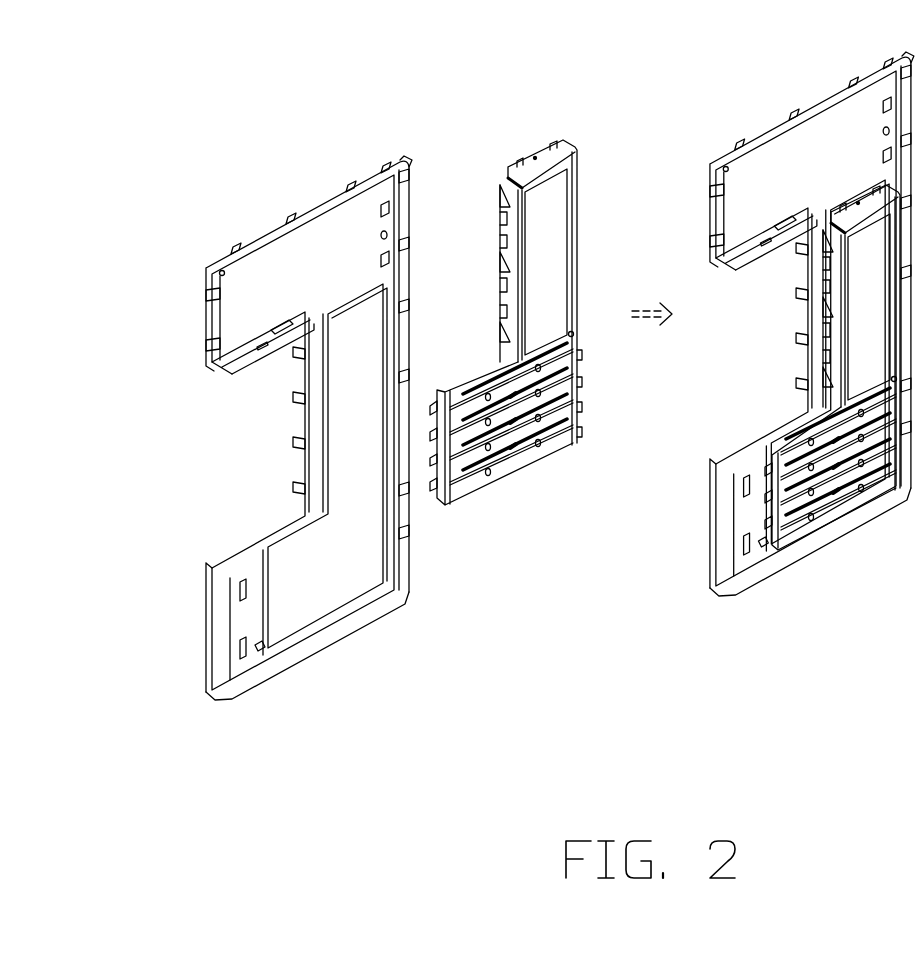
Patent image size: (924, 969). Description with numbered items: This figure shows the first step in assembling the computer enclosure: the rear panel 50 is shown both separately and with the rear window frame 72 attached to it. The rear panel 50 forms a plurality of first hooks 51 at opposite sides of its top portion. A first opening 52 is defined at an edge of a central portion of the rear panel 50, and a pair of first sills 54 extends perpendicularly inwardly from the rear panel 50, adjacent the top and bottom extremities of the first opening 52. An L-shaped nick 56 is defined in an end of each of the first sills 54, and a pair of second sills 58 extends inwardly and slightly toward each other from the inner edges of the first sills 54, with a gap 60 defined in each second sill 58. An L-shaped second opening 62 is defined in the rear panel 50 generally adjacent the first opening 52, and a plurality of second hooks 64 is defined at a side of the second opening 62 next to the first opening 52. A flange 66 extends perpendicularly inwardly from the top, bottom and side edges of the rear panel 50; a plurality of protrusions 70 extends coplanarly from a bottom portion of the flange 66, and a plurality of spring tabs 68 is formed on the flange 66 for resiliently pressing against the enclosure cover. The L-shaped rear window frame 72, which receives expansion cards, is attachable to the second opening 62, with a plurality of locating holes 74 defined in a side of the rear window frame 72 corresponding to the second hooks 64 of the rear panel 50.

The rear panel 50 is at (278, 155).
The first hooks 51 is at (378, 214).
The first opening 52 is at (243, 505).
The first sills 54 is at (222, 365).
The L-shaped nick 56 is at (283, 328).
The second sills 58 is at (238, 376).
The gap 60 is at (265, 352).
The second opening 62 is at (337, 577).
The second hooks 64 is at (258, 642).
The flange 66 is at (402, 213).
The spring tabs 68 is at (404, 166).
The protrusions 70 is at (240, 692).
The rear window frame 72 is at (522, 148).
The locating holes 74 is at (438, 497).